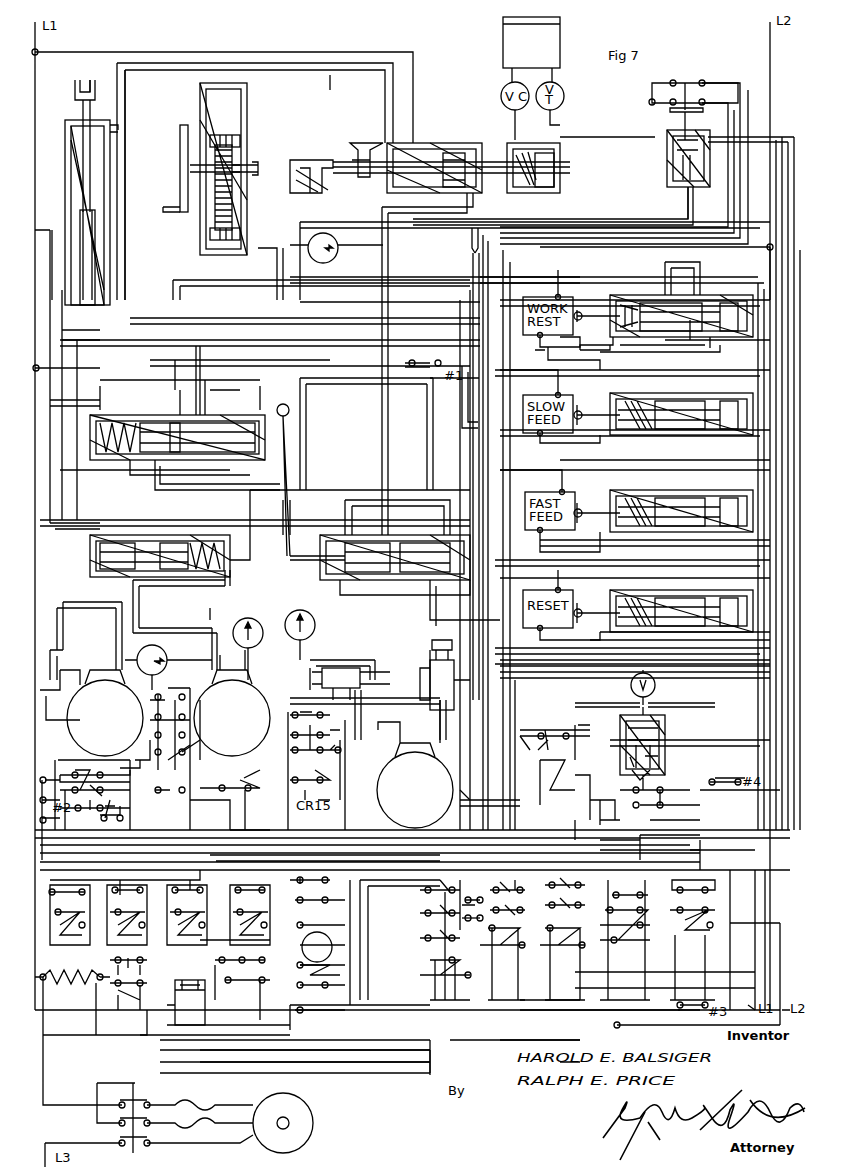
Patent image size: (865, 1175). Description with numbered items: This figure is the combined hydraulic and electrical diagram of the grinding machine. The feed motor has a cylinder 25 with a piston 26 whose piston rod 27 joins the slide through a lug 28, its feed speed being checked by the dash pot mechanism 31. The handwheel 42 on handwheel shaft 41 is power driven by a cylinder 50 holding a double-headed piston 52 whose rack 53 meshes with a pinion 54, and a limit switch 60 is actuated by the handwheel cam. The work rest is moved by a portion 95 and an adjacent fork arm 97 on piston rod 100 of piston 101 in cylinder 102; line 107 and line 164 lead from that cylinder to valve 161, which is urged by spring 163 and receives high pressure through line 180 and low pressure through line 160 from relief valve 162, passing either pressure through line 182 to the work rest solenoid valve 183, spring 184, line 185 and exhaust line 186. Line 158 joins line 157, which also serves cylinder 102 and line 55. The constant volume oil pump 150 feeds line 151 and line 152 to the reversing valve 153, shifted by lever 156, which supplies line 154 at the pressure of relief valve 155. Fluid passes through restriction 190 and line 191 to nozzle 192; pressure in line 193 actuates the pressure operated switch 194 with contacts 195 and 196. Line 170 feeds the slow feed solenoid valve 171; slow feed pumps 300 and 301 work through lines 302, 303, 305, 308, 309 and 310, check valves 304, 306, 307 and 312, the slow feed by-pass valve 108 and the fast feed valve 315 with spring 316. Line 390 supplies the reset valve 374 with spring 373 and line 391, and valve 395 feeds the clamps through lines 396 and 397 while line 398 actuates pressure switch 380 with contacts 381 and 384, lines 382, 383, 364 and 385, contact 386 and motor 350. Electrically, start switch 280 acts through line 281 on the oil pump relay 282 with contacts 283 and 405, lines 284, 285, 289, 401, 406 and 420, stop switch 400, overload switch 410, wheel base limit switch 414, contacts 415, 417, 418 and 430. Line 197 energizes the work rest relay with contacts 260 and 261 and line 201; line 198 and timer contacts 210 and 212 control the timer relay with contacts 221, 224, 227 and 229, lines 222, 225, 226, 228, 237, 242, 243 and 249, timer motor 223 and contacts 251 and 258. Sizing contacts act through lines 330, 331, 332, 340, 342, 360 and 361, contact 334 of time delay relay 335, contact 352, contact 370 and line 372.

The cylinder 25 is at (445, 160).
The piston 26 is at (460, 153).
The piston rod 27 is at (432, 143).
The lug 28 is at (362, 143).
The dash pot mechanism 31 is at (560, 143).
The handwheel shaft 41 is at (252, 165).
The handwheel 42 is at (184, 125).
The cylinder 50 is at (247, 97).
The double-headed piston 52 is at (240, 138).
The rack 53 is at (232, 208).
The pinion 54 is at (232, 180).
The line 55 is at (152, 100).
The limit switch 60 is at (190, 1002).
The portion 95 is at (92, 80).
The fork arm 97 is at (78, 80).
The piston rod 100 is at (82, 106).
The piston 101 is at (78, 218).
The cylinder 102 is at (68, 132).
The line 107 is at (120, 135).
The slow feed by-pass valve 108 is at (176, 540).
The oil pump 150 is at (415, 764).
The line 151 is at (470, 297).
The line 152 is at (420, 590).
The reversing valve 153 is at (360, 542).
The line 154 is at (474, 203).
The relief valve 155 is at (428, 682).
The lever 156 is at (292, 440).
The line 157 is at (126, 250).
The line 158 is at (100, 392).
The line 160 is at (156, 470).
The valve 161 is at (130, 465).
The relief valve 162 is at (352, 686).
The spring 163 is at (100, 460).
The line 164 is at (112, 400).
The line 170 is at (590, 408).
The slow feed solenoid valve 171 is at (728, 403).
The line 180 is at (316, 322).
The line 182 is at (718, 352).
The work rest solenoid valve 183 is at (715, 300).
The spring 184 is at (610, 305).
The line 185 is at (170, 283).
The exhaust line 186 is at (665, 265).
The restriction 190 is at (472, 252).
The line 191 is at (412, 230).
The nozzle 192 is at (322, 160).
The line 193 is at (605, 220).
The pressure operated switch 194 is at (690, 92).
The contact 195 is at (672, 128).
The contact 196 is at (688, 83).
The line 197 is at (730, 82).
The line 198 is at (728, 220).
The line 201 is at (572, 338).
The timer contact 210 is at (322, 941).
The timer contact 212 is at (322, 914).
The contact 221 is at (440, 934).
The line 222 is at (400, 940).
The timer motor 223 is at (325, 964).
The contact 224 is at (437, 902).
The line 225 is at (310, 1006).
The line 226 is at (242, 990).
The contact 227 is at (437, 928).
The line 228 is at (476, 905).
The contact 229 is at (479, 910).
The line 237 is at (470, 824).
The line 242 is at (500, 1010).
The line 243 is at (556, 536).
The conductor 249 is at (770, 955).
The contact 251 is at (507, 880).
The contact 258 is at (507, 902).
The contact 260 is at (614, 948).
The contact 261 is at (630, 885).
The start switch 280 is at (95, 788).
The line 281 is at (114, 807).
The oil pump relay 282 is at (170, 782).
The contact 283 is at (166, 692).
The line 284 is at (208, 784).
The line 285 is at (344, 858).
The line 289 is at (105, 778).
The slow feed oil pump 300 is at (91, 713).
The slow feed oil pump 301 is at (232, 703).
The line 302 is at (116, 622).
The line 303 is at (280, 250).
The check valve 304 is at (338, 242).
The line 305 is at (298, 692).
The check valve 306 is at (168, 655).
The check valve 307 is at (244, 645).
The line 308 is at (244, 524).
The line 309 is at (324, 486).
The line 310 is at (158, 630).
The check valve 312 is at (315, 622).
The fast feed valve 315 is at (700, 496).
The spring 316 is at (622, 498).
The line 330 is at (156, 358).
The line 331 is at (512, 460).
The line 332 is at (540, 728).
The contact 334 is at (578, 712).
The time delay relay 335 is at (572, 785).
The line 340 is at (80, 832).
The line 342 is at (462, 806).
The motor 350 is at (314, 1122).
The contact 352 is at (565, 878).
The line 360 is at (600, 1009).
The line 361 is at (586, 852).
The line 364 is at (668, 870).
The contact 370 is at (694, 892).
The line 372 is at (530, 686).
The spring 373 is at (590, 598).
The reset valve 374 is at (645, 596).
The pressure switch 380 is at (648, 800).
The contact 381 is at (620, 822).
The line 382 is at (604, 808).
The line 383 is at (680, 800).
The contact 384 is at (656, 842).
The line 385 is at (432, 1064).
The contact 386 is at (128, 959).
The line 390 is at (570, 668).
The line 391 is at (222, 596).
The valve 395 is at (656, 678).
The line 396 is at (596, 703).
The line 397 is at (690, 703).
The line 398 is at (665, 712).
The stop switch 400 is at (86, 814).
The conductor 401 is at (206, 806).
The contact 405 is at (190, 758).
The line 406 is at (244, 786).
The switch 410 is at (72, 984).
The wheel base limit switch 414 is at (248, 769).
The contact 415 is at (315, 756).
The contact 417 is at (318, 738).
The contact 418 is at (310, 709).
The line 420 is at (40, 1006).
The contact 430 is at (195, 890).